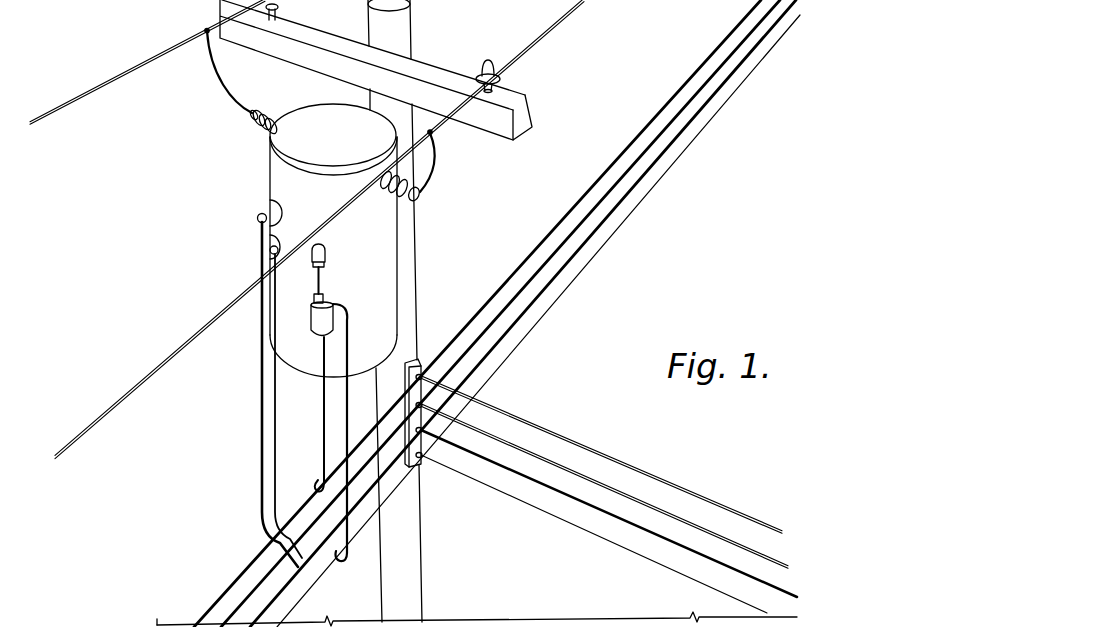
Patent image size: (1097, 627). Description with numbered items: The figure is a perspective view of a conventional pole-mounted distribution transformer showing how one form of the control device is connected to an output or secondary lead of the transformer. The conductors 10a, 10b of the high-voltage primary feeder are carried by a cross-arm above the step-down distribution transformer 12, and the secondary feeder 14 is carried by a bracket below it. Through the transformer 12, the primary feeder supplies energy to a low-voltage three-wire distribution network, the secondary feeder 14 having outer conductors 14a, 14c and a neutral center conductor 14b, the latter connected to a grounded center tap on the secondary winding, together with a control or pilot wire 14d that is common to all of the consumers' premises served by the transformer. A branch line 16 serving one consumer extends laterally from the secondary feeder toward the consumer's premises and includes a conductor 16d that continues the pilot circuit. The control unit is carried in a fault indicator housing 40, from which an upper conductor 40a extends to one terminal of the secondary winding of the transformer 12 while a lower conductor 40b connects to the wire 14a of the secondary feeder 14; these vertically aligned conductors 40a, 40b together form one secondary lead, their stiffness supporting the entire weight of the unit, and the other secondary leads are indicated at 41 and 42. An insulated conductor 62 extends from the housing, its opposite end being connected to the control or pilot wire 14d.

The primary feeder conductor 10a is at (62, 107).
The primary feeder conductor 10b is at (123, 399).
The step-down distribution transformer 12 is at (385, 240).
The secondary feeder 14 is at (497, 313).
The outer conductor 14a is at (667, 104).
The neutral center conductor 14b is at (706, 82).
The outer conductor 14c is at (744, 60).
The control or pilot wire 14d is at (708, 123).
The branch line 16 is at (601, 486).
The conductor 16d is at (577, 526).
The fault indicator housing 40 is at (322, 318).
The upper conductor 40a is at (321, 280).
The lower conductor 40b is at (324, 424).
The secondary lead 41 is at (261, 390).
The secondary lead 42 is at (274, 424).
The insulated conductor 62 is at (348, 356).